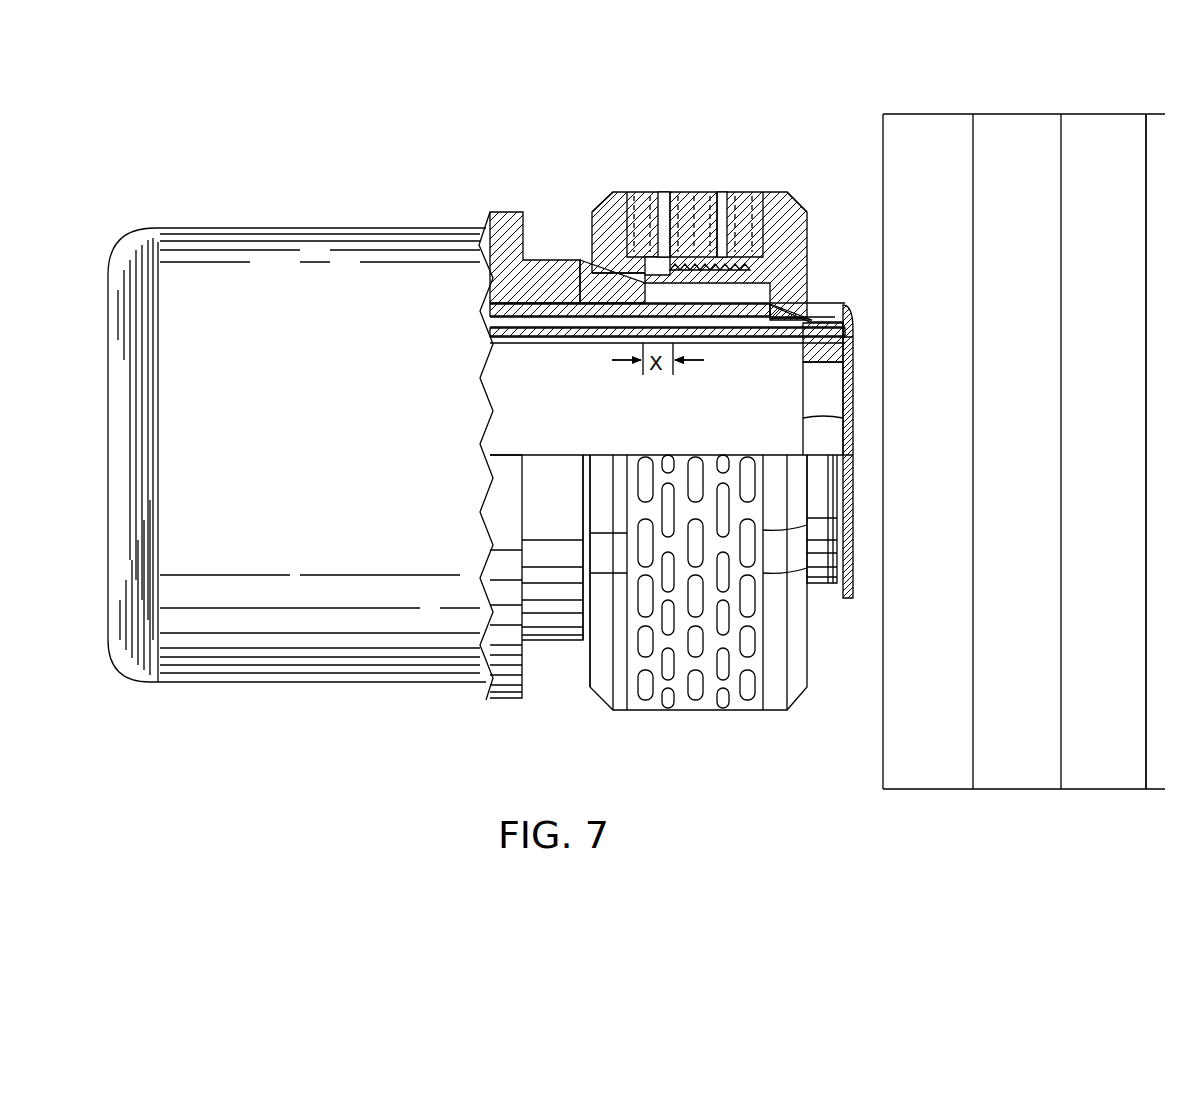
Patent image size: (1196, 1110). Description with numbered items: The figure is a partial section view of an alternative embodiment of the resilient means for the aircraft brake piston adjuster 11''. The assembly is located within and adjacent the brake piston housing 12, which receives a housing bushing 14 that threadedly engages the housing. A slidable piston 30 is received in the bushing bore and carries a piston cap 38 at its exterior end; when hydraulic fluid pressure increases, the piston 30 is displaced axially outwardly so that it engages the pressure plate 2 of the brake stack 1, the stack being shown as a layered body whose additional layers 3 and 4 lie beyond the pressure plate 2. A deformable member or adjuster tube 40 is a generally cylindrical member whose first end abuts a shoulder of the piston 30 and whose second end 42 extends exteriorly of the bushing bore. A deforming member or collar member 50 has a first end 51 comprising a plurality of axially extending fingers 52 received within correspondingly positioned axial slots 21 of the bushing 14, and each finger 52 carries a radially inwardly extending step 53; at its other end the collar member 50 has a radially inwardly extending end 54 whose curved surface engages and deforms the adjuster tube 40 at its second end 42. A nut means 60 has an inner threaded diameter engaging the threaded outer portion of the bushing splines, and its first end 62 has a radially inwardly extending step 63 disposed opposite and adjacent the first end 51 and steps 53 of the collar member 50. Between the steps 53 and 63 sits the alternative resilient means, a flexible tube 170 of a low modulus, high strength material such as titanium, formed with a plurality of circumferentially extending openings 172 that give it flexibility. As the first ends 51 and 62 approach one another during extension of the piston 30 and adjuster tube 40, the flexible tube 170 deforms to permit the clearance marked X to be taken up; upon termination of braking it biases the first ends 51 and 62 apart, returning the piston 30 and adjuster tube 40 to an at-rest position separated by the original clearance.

The brake stack 1 is at (984, 808).
The pressure plate 2 is at (932, 790).
The wall layer 3 is at (1018, 790).
The wall layer 4 is at (1099, 790).
The brake piston adjuster 11'' is at (814, 81).
The brake piston housing 12 is at (272, 248).
The housing bushing 14 is at (490, 212).
The axial slots 21 is at (573, 343).
The piston 30 is at (780, 345).
The piston cap 38 is at (830, 418).
The adjuster tube 40 is at (528, 343).
The second end 42 is at (746, 343).
The collar member 50 is at (848, 306).
The first end 51 is at (590, 160).
The fingers 52 is at (632, 283).
The radially inwardly extending step 53 is at (610, 193).
The radially inwardly extending end 54 is at (808, 280).
The nut means 60 is at (803, 205).
The first end 62 is at (678, 265).
The radially inwardly extending step 63 is at (785, 193).
The flexible tube 170 is at (678, 172).
The circumferentially extending openings 172 is at (722, 198).